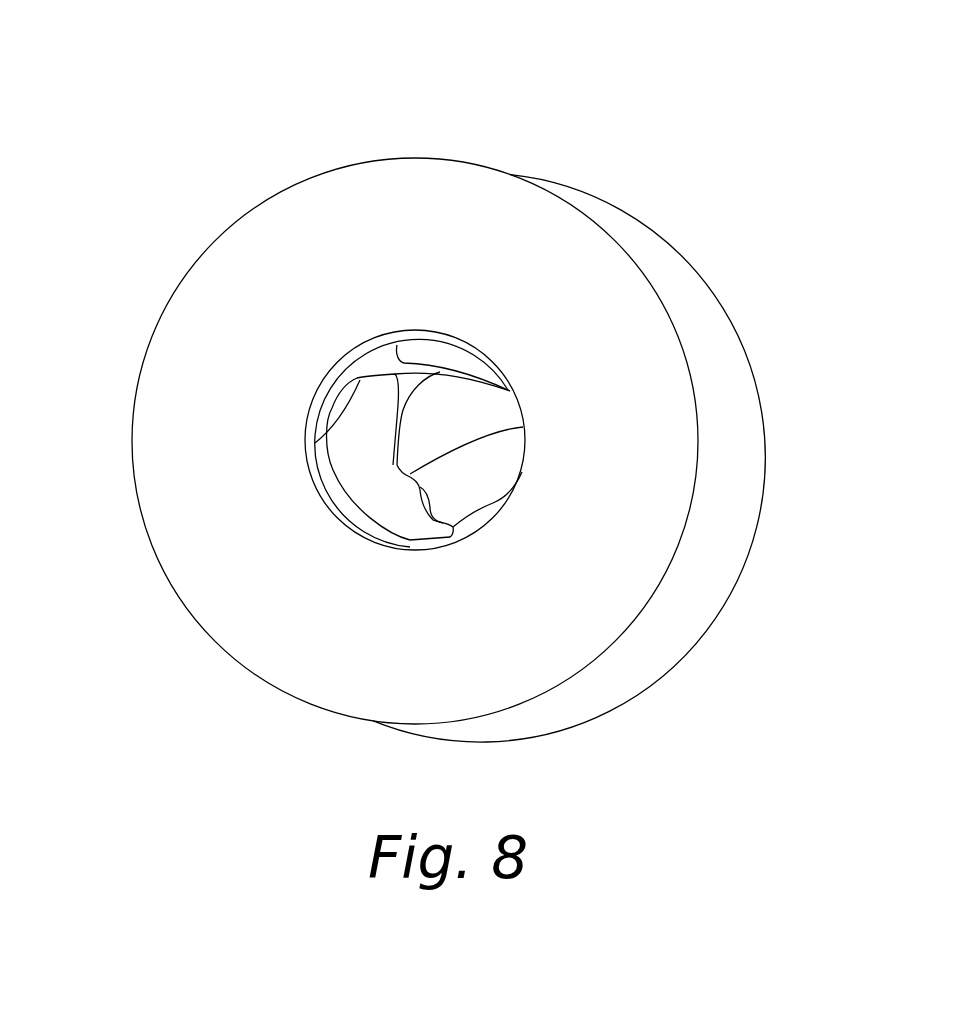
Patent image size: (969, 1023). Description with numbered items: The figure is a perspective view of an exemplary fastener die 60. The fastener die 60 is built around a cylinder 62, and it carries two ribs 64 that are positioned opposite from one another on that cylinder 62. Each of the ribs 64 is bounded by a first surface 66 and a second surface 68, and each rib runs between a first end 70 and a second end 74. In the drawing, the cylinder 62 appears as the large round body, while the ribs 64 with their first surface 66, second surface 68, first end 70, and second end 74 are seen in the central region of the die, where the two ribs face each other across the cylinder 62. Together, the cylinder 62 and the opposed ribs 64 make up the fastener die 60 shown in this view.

The fastener die 60 is at (288, 86).
The cylinder 62 is at (360, 463).
The ribs 64 is at (388, 363).
The first surface 66 is at (440, 353).
The second surface 68 is at (316, 441).
The first end 70 is at (392, 418).
The second end 74 is at (523, 427).